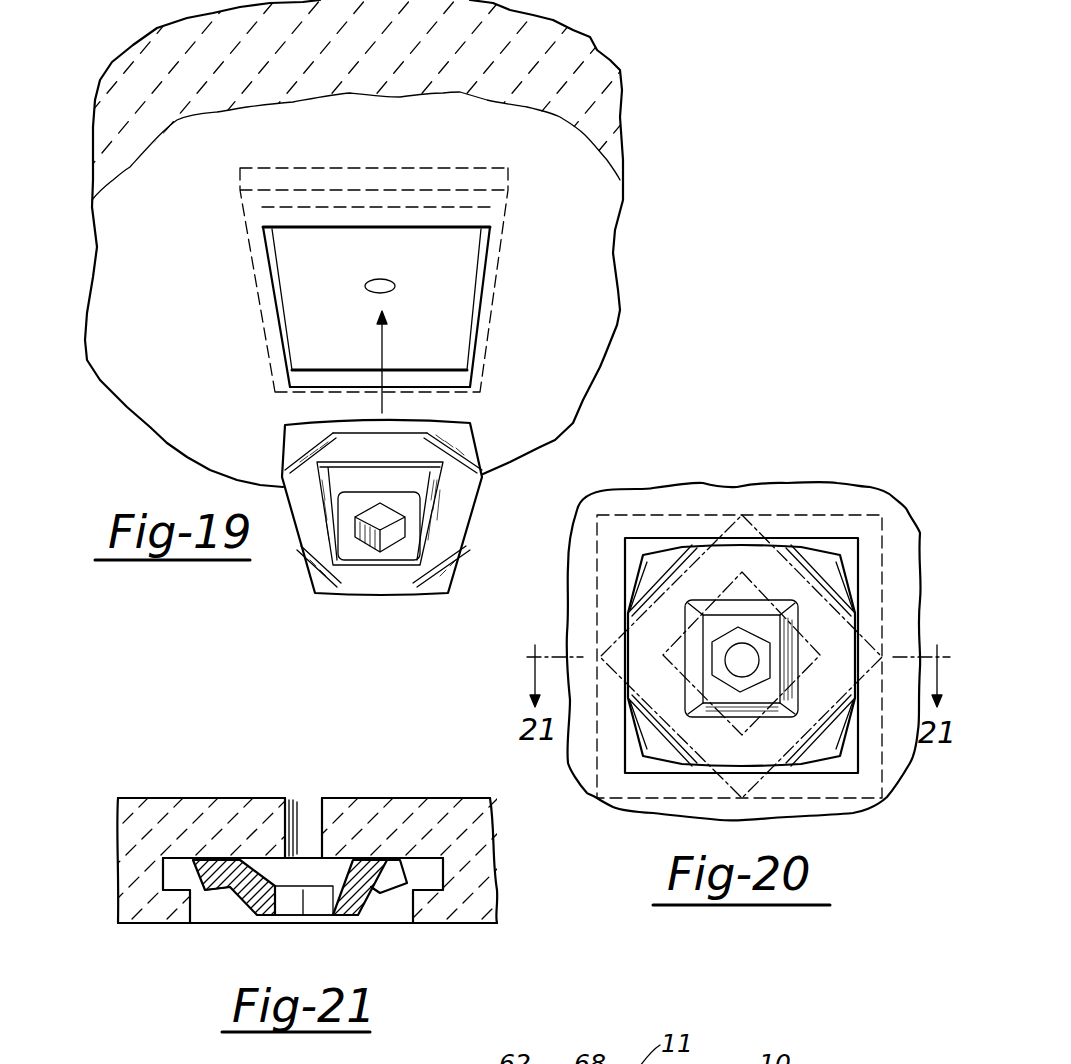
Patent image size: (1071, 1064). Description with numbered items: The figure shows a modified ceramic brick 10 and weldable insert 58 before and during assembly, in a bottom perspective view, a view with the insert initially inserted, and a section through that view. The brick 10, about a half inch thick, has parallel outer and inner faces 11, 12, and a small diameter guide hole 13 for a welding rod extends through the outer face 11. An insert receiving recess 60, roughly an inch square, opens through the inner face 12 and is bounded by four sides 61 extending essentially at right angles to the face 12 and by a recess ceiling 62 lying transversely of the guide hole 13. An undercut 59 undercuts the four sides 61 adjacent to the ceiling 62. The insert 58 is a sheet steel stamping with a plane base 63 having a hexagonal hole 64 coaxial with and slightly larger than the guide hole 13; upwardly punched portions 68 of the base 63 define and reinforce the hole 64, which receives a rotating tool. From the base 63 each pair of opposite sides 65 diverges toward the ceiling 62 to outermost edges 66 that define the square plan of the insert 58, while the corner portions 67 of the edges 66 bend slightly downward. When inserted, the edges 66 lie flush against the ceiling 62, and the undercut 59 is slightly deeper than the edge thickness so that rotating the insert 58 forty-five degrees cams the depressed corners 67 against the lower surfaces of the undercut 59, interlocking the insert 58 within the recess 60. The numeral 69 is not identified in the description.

In FIG. 19, the ceramic brick 10 is at (645, 235).
In FIG. 20, the ceramic brick 10 is at (719, 484).
In FIG. 21, the ceramic brick 10 is at (118, 810).
In FIG. 21, the outer face 11 is at (173, 797).
In FIG. 19, the inner face 12 is at (590, 342).
In FIG. 21, the inner face 12 is at (157, 925).
In FIG. 19, the guide hole 13 is at (364, 284).
In FIG. 20, the guide hole 13 is at (745, 652).
In FIG. 21, the guide hole 13 is at (293, 856).
In FIG. 19, the weldable insert 58 is at (291, 537).
In FIG. 20, the weldable insert 58 is at (665, 551).
In FIG. 21, the weldable insert 58 is at (361, 913).
In FIG. 19, the undercut 59 is at (253, 278).
In FIG. 20, the undercut 59 is at (797, 515).
In FIG. 21, the undercut 59 is at (167, 878).
In FIG. 19, the insert receiving recess 60 is at (447, 320).
In FIG. 20, the insert receiving recess 60 is at (840, 767).
In FIG. 21, the insert receiving recess 60 is at (207, 922).
In FIG. 19, the sides of the recess 61 is at (480, 282).
In FIG. 20, the sides of the recess 61 is at (720, 643).
In FIG. 21, the sides of the recess 61 is at (407, 917).
In FIG. 19, the recess ceiling 62 is at (358, 248).
In FIG. 21, the recess ceiling 62 is at (326, 862).
In FIG. 19, the plane base 63 is at (410, 550).
In FIG. 20, the plane base 63 is at (842, 708).
In FIG. 21, the plane base 63 is at (338, 922).
In FIG. 19, the hexagonal hole 64 is at (382, 515).
In FIG. 20, the hexagonal hole 64 is at (743, 689).
In FIG. 19, the sides of the insert 65 is at (427, 522).
In FIG. 20, the sides of the insert 65 is at (741, 658).
In FIG. 21, the sides of the insert 65 is at (213, 897).
In FIG. 19, the outermost edges 66 is at (395, 428).
In FIG. 20, the outermost edges 66 is at (842, 652).
In FIG. 21, the outermost edges 66 is at (430, 861).
In FIG. 19, the corner portions 67 is at (285, 435).
In FIG. 20, the corner portions 67 is at (626, 710).
In FIG. 21, the corner portions 67 is at (193, 887).
In FIG. 21, the upwardly punched portions 68 is at (278, 857).
In FIG. 21, the floor underside 69 is at (318, 925).